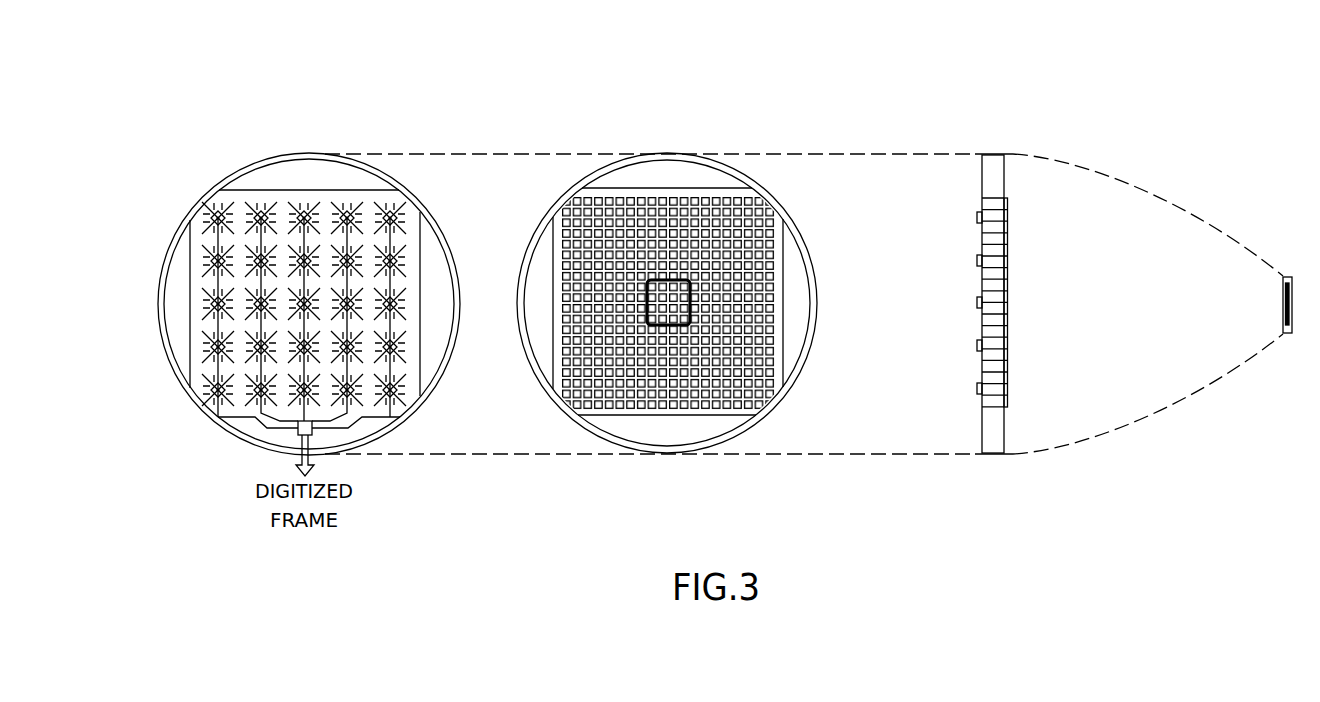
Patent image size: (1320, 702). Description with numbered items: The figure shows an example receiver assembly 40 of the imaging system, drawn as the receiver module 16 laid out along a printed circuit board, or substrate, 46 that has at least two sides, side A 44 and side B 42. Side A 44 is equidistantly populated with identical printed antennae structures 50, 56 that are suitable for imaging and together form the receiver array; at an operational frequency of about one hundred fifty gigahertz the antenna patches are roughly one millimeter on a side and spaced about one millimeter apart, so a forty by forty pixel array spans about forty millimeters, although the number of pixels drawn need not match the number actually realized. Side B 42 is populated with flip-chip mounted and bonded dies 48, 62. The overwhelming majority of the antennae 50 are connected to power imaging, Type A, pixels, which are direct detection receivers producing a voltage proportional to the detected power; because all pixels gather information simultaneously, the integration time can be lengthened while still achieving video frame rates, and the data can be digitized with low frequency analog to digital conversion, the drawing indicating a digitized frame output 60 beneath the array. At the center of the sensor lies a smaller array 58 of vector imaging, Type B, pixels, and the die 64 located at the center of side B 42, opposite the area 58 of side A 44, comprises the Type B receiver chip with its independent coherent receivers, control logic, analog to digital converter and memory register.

The receiver module 16 is at (1292, 312).
The detector system 40 is at (198, 515).
The side B 42 is at (293, 153).
The side A 44 is at (668, 153).
The printed circuit board 46 is at (992, 154).
The flip-chip mounted/bonded dies 48 is at (978, 347).
The printed antennae structures 50 is at (1008, 310).
The printed antennae structures 56 is at (588, 383).
The smaller array of vector imaging pixels 58 is at (690, 280).
The output port 60 is at (297, 432).
The flip-chip mounted/bonded dies 62 is at (211, 298).
The die 64 is at (292, 318).